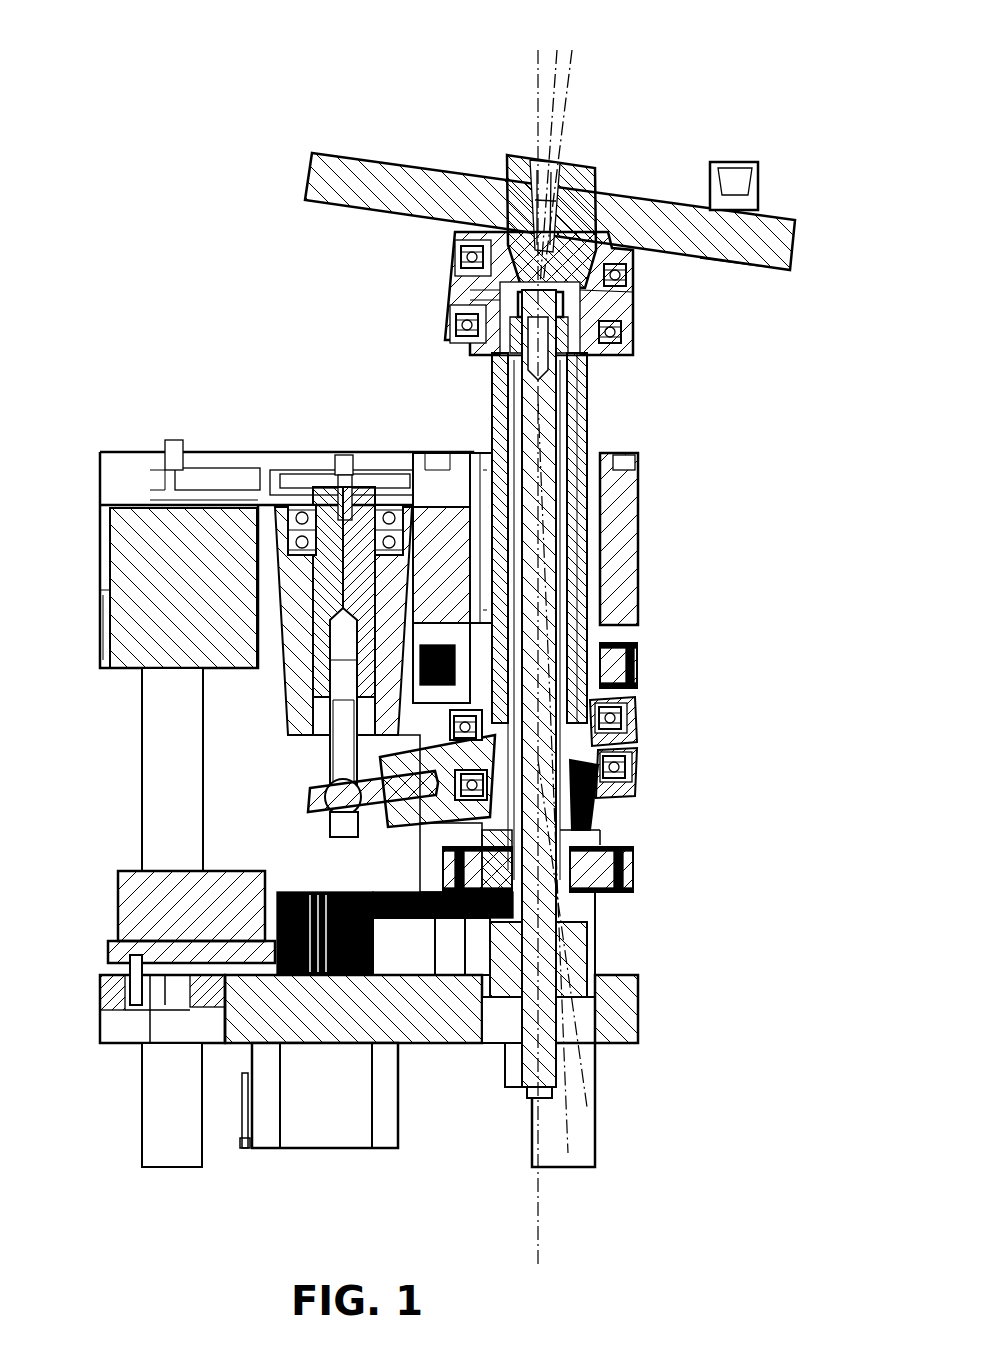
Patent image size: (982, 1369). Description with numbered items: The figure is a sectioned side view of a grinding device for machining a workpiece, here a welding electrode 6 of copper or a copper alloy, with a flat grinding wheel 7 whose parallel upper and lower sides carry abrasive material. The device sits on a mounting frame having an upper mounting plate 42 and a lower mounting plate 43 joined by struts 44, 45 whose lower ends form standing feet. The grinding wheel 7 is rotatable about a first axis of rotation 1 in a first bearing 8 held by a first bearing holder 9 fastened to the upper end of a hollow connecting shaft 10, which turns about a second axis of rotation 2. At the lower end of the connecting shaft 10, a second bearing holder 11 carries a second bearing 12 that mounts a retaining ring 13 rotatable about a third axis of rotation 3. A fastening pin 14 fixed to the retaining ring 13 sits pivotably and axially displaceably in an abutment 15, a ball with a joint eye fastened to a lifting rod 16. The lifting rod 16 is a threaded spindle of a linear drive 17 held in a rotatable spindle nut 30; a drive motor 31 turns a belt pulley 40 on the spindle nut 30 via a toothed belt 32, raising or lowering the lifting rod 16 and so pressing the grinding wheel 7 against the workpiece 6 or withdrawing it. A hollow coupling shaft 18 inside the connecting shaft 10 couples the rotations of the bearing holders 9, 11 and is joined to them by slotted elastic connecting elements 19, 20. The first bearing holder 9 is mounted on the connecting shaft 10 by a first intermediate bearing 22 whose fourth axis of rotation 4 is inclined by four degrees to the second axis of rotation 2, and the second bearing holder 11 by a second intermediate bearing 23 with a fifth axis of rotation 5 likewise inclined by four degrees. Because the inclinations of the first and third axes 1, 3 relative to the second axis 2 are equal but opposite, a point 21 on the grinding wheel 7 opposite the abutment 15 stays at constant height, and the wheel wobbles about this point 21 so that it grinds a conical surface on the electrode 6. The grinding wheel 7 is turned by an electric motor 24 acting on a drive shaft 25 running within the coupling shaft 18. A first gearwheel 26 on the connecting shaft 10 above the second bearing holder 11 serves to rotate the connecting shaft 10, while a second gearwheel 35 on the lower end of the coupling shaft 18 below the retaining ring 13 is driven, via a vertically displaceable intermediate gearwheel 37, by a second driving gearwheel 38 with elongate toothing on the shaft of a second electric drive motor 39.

The first axis of rotation 1 is at (573, 80).
The second axis of rotation 2 is at (536, 107).
The third axis of rotation 3 is at (587, 1090).
The fourth axis of rotation 4 is at (554, 85).
The fifth axis of rotation 5 is at (568, 1147).
The welding electrode 6 is at (747, 200).
The grinding wheel 7 is at (763, 250).
The first bearing 8 is at (477, 245).
The first bearing holder 9 is at (457, 275).
The connecting shaft 10 is at (497, 398).
The second bearing holder 11 is at (627, 713).
The second bearing 12 is at (613, 770).
The retaining ring 13 is at (618, 780).
The fastening pin 14 is at (378, 797).
The abutment 15 is at (320, 788).
The lifting rod 16 is at (342, 750).
The linear drive 17 is at (303, 690).
The coupling shaft 18 is at (565, 398).
The connecting element 19 is at (568, 302).
The connecting element 20 is at (582, 807).
The point 21 is at (733, 214).
The first intermediate bearing 22 is at (450, 318).
The second intermediate bearing 23 is at (620, 730).
The electric motor 24 is at (132, 917).
The drive shaft 25 is at (543, 427).
The first gearwheel 26 is at (615, 678).
The spindle nut 30 is at (295, 677).
The drive motor 31 is at (138, 558).
The toothed belt 32 is at (222, 480).
The second gearwheel 35 is at (603, 865).
The intermediate gearwheel 37 is at (410, 892).
The second driving gearwheel 38 is at (307, 892).
The second electric drive motor 39 is at (323, 1127).
The belt pulley 40 is at (410, 477).
The upper mounting plate 42 is at (628, 538).
The lower mounting plate 43 is at (630, 1023).
The strut 44 is at (577, 1170).
The strut 45 is at (162, 1170).